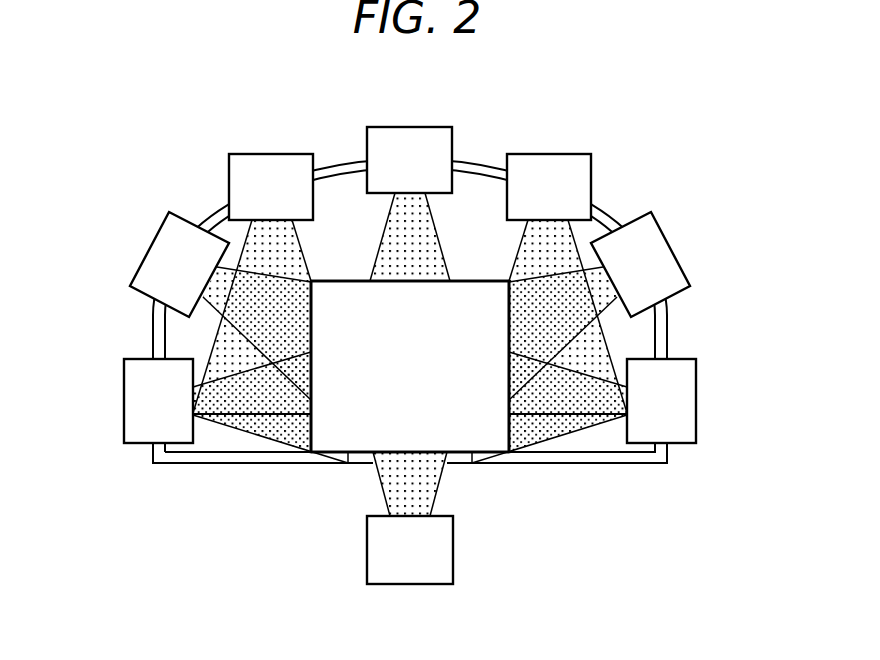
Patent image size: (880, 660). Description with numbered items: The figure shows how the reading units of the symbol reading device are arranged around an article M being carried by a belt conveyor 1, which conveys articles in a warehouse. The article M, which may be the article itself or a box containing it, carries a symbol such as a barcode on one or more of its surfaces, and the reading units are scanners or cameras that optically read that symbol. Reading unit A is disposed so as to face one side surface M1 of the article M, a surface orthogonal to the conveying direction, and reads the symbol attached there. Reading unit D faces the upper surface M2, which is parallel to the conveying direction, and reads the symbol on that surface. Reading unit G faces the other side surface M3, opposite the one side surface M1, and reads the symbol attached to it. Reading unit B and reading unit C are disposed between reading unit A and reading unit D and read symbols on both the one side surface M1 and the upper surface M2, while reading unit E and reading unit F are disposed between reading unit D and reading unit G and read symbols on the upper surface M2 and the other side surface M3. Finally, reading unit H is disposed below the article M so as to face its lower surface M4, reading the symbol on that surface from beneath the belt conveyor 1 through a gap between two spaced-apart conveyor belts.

The belt conveyor 1 is at (595, 464).
The article M is at (468, 280).
The one side surface M1 is at (311, 427).
The upper surface M2 is at (340, 280).
The other side surface M3 is at (509, 427).
The lower surface M4 is at (359, 464).
The reading unit A is at (124, 399).
The reading unit B is at (148, 252).
The reading unit C is at (271, 154).
The reading unit D is at (409, 127).
The reading unit E is at (546, 154).
The reading unit F is at (678, 255).
The reading unit G is at (697, 402).
The reading unit H is at (423, 585).